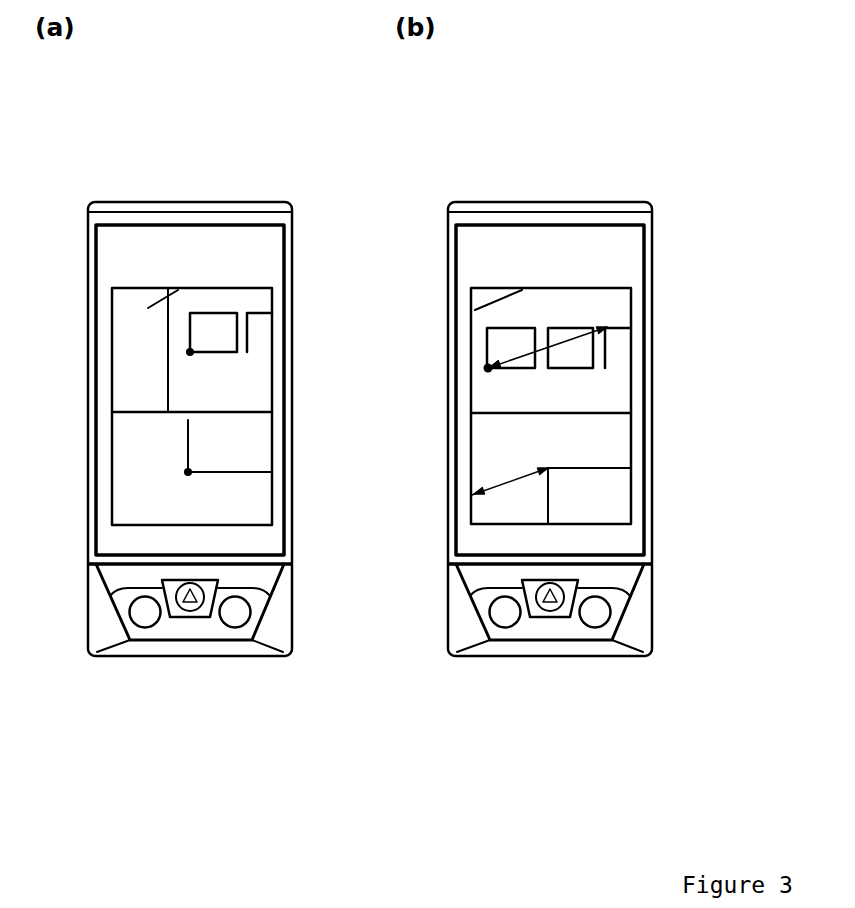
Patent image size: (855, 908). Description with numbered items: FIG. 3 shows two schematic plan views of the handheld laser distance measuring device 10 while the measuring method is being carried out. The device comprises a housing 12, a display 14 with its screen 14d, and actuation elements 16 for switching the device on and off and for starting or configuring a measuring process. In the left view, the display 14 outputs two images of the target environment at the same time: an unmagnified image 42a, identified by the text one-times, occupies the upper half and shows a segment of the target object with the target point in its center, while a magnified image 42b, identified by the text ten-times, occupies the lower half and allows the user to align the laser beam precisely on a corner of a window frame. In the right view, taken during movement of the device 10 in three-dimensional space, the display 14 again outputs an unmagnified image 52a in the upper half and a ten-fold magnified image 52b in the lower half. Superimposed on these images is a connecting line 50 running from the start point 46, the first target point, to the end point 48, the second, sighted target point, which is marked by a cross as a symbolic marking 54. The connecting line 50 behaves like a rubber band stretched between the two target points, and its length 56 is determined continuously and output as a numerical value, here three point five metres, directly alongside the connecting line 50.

The laser distance measuring device 10 is at (109, 155).
The housing 12 is at (97, 632).
The display 14 is at (381, 353).
The display screen 14d is at (233, 278).
The actuation elements 16 is at (181, 631).
The unmagnified image 42a is at (130, 352).
The magnified image 42b is at (130, 462).
The start point 46 is at (484, 370).
The end point 48 is at (608, 324).
The connecting line 50 is at (529, 357).
The unmagnified image 52a is at (482, 350).
The magnified image 52b is at (480, 458).
The symbolic marking 54 is at (616, 338).
The length 56 is at (585, 361).